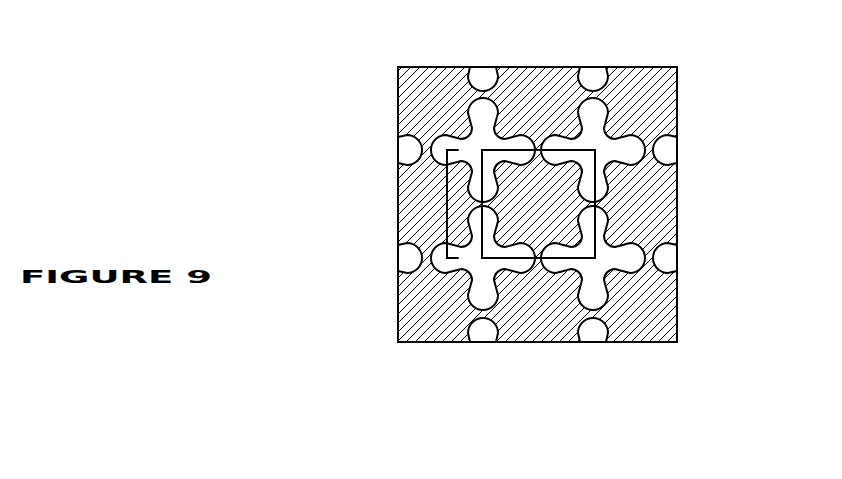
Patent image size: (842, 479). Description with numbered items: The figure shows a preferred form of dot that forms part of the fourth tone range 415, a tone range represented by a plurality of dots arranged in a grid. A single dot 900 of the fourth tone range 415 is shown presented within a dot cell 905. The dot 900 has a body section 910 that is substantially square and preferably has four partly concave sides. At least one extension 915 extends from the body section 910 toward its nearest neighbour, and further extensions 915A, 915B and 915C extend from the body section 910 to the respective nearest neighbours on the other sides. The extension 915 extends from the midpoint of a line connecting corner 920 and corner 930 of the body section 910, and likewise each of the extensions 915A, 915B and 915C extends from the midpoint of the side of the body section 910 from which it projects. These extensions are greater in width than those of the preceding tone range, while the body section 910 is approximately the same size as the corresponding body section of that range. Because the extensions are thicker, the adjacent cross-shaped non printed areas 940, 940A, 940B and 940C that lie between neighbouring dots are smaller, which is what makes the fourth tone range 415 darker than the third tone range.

The fourth tone range 415 is at (637, 323).
The dot 900 is at (447, 212).
The dot cell 905 is at (474, 276).
The body section 910 is at (540, 205).
The extension 915 is at (588, 205).
The further extension 915A is at (538, 148).
The further extension 915B is at (486, 206).
The further extension 915C is at (537, 262).
The corner 920 is at (578, 195).
The corner 930 is at (578, 302).
The non printed area 940 is at (478, 116).
The non printed area 940A is at (595, 118).
The non printed area 940B is at (627, 263).
The non printed area 940C is at (482, 295).